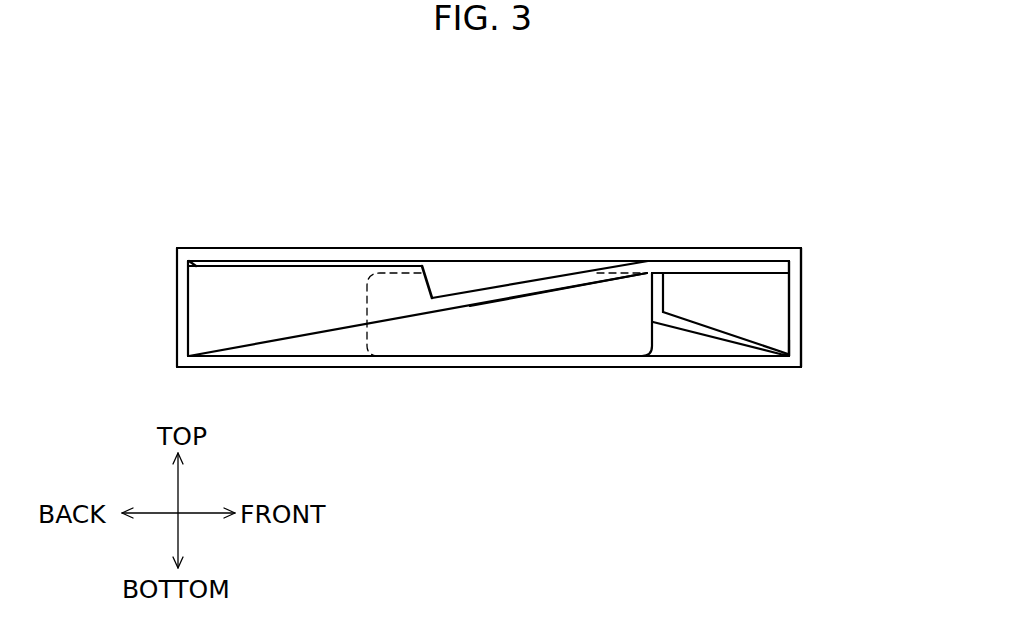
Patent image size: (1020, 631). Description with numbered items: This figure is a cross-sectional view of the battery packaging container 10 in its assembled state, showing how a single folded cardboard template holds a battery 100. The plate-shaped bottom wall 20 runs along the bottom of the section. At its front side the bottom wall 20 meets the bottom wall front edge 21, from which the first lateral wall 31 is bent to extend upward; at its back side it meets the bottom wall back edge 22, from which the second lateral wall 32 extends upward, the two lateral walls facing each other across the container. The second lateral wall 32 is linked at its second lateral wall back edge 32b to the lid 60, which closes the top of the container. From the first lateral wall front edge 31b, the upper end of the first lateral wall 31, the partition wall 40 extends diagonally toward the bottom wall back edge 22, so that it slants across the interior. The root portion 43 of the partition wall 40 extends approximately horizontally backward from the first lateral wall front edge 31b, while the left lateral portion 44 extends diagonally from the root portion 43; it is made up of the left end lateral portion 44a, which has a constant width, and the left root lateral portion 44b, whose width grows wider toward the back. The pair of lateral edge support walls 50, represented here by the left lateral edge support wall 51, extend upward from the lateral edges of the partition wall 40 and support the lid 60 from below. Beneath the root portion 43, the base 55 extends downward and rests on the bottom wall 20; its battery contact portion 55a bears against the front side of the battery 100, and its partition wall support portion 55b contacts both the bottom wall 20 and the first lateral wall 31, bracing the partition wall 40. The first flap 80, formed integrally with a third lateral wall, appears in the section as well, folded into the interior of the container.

The battery packaging container 10 is at (253, 125).
The bottom wall 20 is at (476, 361).
The bottom wall front edge 21 is at (774, 342).
The bottom wall back edge 22 is at (193, 354).
The first lateral wall 31 is at (795, 318).
The first lateral wall front edge 31b is at (758, 300).
The second lateral wall 32 is at (183, 306).
The second lateral wall back edge 32b is at (213, 267).
The partition wall 40 is at (754, 174).
The root portion 43 is at (757, 267).
The left lateral portion 44 is at (518, 292).
The left end lateral portion 44a is at (476, 299).
The left root lateral portion 44b is at (632, 265).
The lateral edge support walls 50 is at (305, 207).
The left lateral edge support wall 51 is at (275, 283).
The base 55 is at (778, 257).
The battery contact portion 55a is at (664, 292).
The partition wall support portion 55b is at (730, 335).
The lid 60 is at (383, 253).
The first flap 80 is at (525, 267).
The battery 100 is at (577, 330).